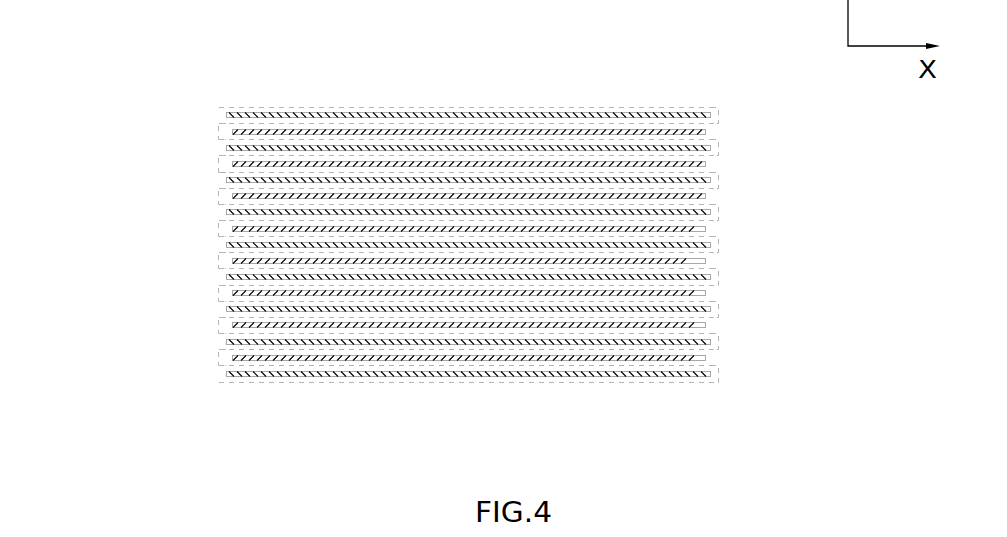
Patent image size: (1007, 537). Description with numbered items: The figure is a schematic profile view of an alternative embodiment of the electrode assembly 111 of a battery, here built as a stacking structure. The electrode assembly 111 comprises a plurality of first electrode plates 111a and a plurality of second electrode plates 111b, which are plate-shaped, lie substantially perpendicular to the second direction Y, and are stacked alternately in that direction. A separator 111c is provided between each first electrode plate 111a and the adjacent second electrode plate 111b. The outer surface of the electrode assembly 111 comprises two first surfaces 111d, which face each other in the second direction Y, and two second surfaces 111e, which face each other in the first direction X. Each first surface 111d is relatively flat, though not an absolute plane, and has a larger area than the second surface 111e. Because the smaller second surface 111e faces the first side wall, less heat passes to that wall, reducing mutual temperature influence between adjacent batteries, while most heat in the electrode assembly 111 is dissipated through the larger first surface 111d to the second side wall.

The electrode assembly 111 is at (121, 41).
The first electrode plate 111a is at (523, 132).
The second electrode plate 111b is at (450, 112).
The separator 111c is at (610, 123).
The first surface 111d is at (329, 86).
The second surface 111e is at (202, 269).